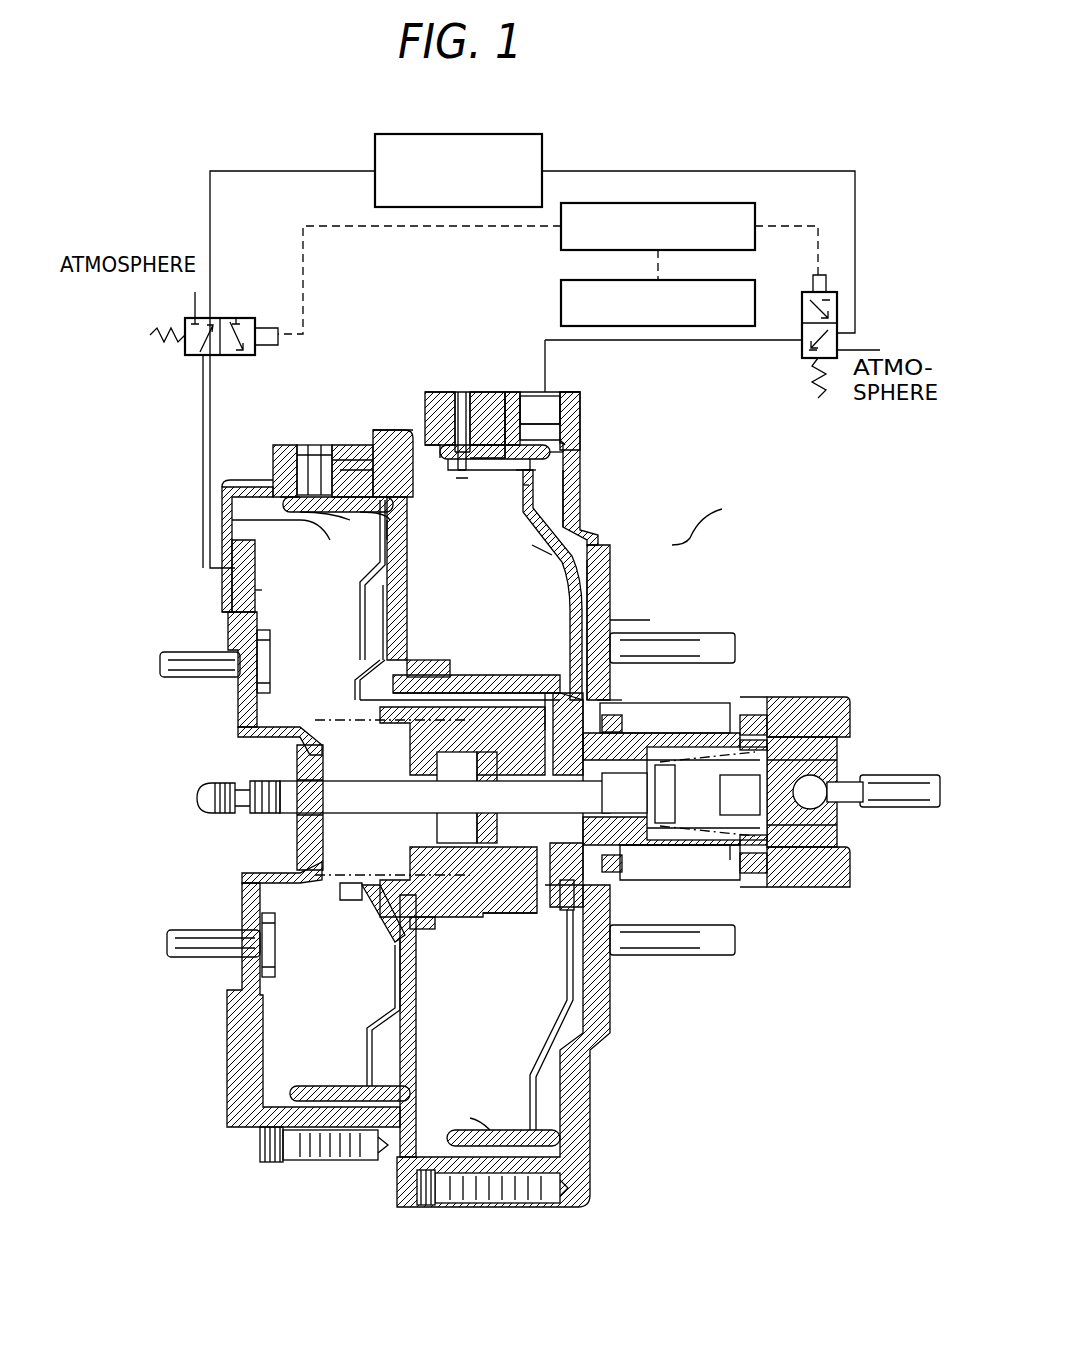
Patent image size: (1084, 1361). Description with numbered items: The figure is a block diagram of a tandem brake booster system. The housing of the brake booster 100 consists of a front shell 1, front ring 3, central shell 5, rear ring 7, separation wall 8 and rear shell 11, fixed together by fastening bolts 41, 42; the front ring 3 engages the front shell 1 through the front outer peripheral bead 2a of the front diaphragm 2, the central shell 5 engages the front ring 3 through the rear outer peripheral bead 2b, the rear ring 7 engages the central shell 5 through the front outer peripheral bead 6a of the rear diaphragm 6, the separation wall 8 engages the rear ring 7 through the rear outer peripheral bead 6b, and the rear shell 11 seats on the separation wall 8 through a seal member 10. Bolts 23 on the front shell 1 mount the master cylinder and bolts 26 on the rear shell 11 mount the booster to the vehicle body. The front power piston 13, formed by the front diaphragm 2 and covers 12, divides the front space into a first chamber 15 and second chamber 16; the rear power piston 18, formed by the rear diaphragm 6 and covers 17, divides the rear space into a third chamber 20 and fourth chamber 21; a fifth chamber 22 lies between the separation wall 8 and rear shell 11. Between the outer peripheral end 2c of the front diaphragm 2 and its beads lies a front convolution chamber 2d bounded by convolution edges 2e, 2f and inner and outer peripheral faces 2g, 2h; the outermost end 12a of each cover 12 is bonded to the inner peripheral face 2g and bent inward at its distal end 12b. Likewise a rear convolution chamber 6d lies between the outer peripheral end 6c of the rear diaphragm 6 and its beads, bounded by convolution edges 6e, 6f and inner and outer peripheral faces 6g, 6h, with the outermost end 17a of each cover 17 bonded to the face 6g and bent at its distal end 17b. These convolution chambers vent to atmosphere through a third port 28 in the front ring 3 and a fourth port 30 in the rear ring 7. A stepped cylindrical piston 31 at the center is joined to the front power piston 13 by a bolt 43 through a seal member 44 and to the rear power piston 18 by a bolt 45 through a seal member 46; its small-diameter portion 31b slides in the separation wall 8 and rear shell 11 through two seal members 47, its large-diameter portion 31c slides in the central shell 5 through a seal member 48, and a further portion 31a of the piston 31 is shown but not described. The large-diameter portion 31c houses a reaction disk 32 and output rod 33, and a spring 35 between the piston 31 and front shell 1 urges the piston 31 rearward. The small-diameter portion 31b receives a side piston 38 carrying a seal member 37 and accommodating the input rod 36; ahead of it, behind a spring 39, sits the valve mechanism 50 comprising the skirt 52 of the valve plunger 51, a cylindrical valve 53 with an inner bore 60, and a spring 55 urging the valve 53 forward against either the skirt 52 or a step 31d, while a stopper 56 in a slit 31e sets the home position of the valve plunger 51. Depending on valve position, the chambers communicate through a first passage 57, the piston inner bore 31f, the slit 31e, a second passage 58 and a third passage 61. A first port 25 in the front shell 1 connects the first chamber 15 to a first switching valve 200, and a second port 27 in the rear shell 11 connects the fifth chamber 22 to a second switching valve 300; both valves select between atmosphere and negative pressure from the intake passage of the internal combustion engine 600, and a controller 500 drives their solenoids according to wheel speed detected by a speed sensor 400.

The internal combustion engine 600 is at (543, 151).
The controller 500 is at (748, 208).
The speed sensor 400 is at (732, 285).
The second switching valve 300 is at (800, 348).
The first switching valve 200 is at (232, 318).
The separation wall 8 is at (508, 392).
The fourth port 30 is at (473, 392).
The rear ring 7 is at (460, 392).
The central shell 5 is at (428, 398).
The front outer peripheral bead 6a is at (450, 400).
The rear outer peripheral bead 6b is at (487, 405).
The seal member 10 is at (512, 400).
The cap recess 6h is at (545, 405).
The second port 27 is at (572, 398).
The front convolution edge 6e is at (428, 420).
The third chamber 20 is at (392, 410).
The rear outer peripheral bead 2b is at (340, 450).
The third port 28 is at (290, 447).
The front ring 3 is at (313, 448).
The outer peripheral face 2h is at (350, 455).
The front outer peripheral bead 2a is at (290, 487).
The front convolution edge 2e is at (222, 487).
The front convolution chamber 2d is at (228, 520).
The inner peripheral face 2g is at (225, 545).
The distal end 12b is at (235, 590).
The first port 25 is at (225, 592).
The front shell 1 is at (240, 630).
The first chamber 15 is at (262, 680).
The outermost end 12a is at (340, 530).
The outer peripheral end 2c is at (362, 530).
The covers 12 is at (376, 592).
The front power piston 13 is at (385, 612).
The rear convolution edge 2f is at (395, 506).
The second chamber 16 is at (405, 536).
The front diaphragm 2 is at (405, 564).
The rear convolution chamber 6d is at (452, 462).
The distal end 17b is at (492, 472).
The outermost end 17a is at (522, 492).
The rear power piston 18 is at (530, 547).
The covers 17 is at (547, 578).
The inner peripheral face 6g is at (455, 480).
The second passage 58 is at (432, 665).
The large-diameter portion 31c is at (500, 676).
The stepped cylindrical piston 31 is at (545, 676).
The rear convolution edge 6f is at (580, 434).
The outer peripheral end 6c is at (580, 465).
The rear diaphragm 6 is at (570, 484).
The fourth chamber 21 is at (590, 513).
The rear shell 11 is at (615, 548).
The brake booster 100 is at (768, 508).
The housing portion 31a is at (606, 578).
The slit 31e is at (612, 618).
The bolts 26 is at (697, 636).
The stopper 56 is at (615, 716).
The fifth chamber 22 is at (660, 706).
The step 31d is at (700, 712).
The small-diameter portion 31b is at (745, 717).
The spring 55 is at (790, 718).
The spring 39 is at (830, 700).
The seal member 37 is at (850, 739).
The side piston 38 is at (845, 762).
The input rod 36 is at (915, 802).
The inner bore 60 is at (830, 812).
The seal members 47 is at (625, 907).
The third passage 61 is at (770, 864).
The valve mechanism 50 is at (735, 850).
The skirt 52 is at (700, 842).
The cylindrical valve 53 is at (660, 822).
The output rod 33 is at (295, 787).
The reaction disk 32 is at (470, 787).
The spring 35 is at (252, 874).
The bolt 43 is at (360, 897).
The seal member 44 is at (385, 917).
The seal member 48 is at (440, 940).
The first passage 57 is at (478, 897).
The valve plunger 51 is at (505, 907).
The seal member 46 is at (560, 902).
The piston inner bore 31f is at (655, 902).
The bolt 45 is at (605, 1000).
The bolts 23 is at (207, 955).
The fastening bolt 41 is at (310, 1150).
The fastening bolt 42 is at (575, 1192).